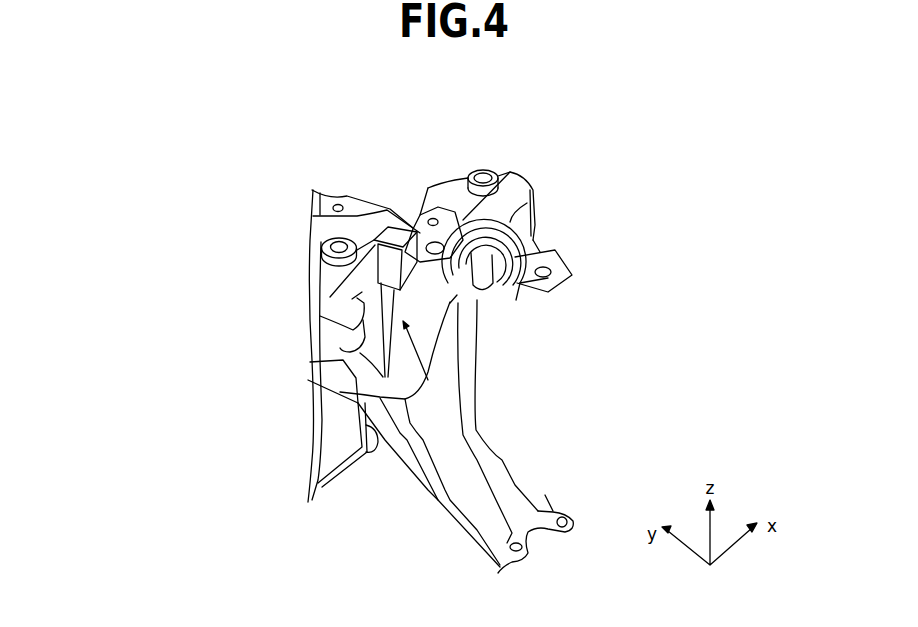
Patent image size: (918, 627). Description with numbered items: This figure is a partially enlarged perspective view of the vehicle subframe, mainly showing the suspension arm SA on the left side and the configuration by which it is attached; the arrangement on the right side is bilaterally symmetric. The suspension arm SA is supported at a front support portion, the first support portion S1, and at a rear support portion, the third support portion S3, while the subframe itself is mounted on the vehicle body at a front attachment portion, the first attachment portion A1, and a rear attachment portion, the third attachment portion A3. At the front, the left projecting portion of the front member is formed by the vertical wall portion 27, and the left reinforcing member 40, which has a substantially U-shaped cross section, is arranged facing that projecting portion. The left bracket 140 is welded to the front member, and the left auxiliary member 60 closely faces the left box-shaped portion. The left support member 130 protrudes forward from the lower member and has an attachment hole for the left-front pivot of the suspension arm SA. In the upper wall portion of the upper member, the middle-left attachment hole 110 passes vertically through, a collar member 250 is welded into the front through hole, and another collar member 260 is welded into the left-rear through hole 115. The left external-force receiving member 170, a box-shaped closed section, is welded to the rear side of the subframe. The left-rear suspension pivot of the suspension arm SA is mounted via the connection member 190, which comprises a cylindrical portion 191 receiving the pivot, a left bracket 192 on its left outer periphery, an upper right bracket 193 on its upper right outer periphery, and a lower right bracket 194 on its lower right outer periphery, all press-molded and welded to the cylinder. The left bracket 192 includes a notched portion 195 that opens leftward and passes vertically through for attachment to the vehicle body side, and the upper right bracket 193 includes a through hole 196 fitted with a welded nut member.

The middle-left attachment hole 110 is at (312, 207).
The collar member 250 is at (322, 245).
The left auxiliary member 60 is at (335, 264).
The vertical wall portion 27 is at (352, 299).
The left bracket 140 is at (326, 347).
The left external-force receiving member 170 is at (323, 408).
The connection member 190 is at (499, 234).
The cylindrical portion 191 is at (522, 238).
The left-rear through hole 115 is at (482, 172).
The collar member 260 is at (503, 167).
The third attachment portion A3 is at (506, 170).
The upper right bracket 193 is at (460, 223).
The through hole 196 is at (420, 207).
The third support portion S3 is at (432, 210).
The first attachment portion A1 is at (408, 204).
The left bracket 192 is at (535, 300).
The lower right bracket 194 is at (470, 292).
The notched portion 195 is at (558, 282).
The first support portion S1 is at (362, 337).
The suspension arm SA is at (467, 436).
The left reinforcing member 40 is at (439, 432).
The left support member 130 is at (384, 452).